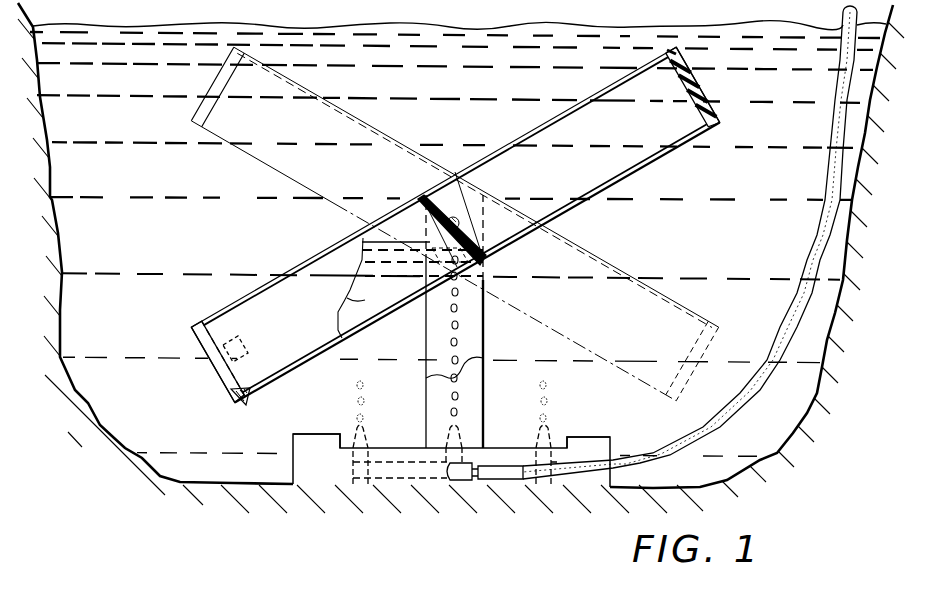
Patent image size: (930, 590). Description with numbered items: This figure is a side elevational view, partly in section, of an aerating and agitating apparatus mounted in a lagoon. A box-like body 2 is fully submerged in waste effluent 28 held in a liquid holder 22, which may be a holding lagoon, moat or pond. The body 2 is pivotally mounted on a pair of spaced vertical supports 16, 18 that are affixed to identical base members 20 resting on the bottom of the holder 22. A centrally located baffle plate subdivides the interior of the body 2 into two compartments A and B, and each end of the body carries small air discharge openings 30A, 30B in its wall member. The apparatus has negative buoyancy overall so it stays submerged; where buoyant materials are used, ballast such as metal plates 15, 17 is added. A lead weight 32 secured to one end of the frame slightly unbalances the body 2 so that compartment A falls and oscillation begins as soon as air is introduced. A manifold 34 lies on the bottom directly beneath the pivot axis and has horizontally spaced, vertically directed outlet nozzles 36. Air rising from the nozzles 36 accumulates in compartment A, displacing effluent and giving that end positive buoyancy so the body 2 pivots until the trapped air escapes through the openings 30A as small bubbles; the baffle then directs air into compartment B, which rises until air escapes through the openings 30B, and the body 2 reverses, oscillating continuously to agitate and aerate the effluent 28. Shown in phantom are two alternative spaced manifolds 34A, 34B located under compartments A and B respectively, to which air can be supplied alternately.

The box-like body 2 is at (198, 80).
The metal plate 15 is at (230, 403).
The vertical support 16 is at (432, 393).
The metal plate 17 is at (310, 430).
The vertical support 18 is at (430, 337).
The base member 20 is at (293, 463).
The liquid holder 22 is at (110, 432).
The waste effluent 28 is at (114, 129).
The air discharge openings 30A is at (205, 327).
The air discharge openings 30B is at (670, 51).
The lead weight 32 is at (240, 346).
The manifold 34 is at (445, 452).
The gas manifold 34A is at (353, 458).
The gas manifold 34B is at (537, 457).
The outlet nozzle 36 is at (460, 433).
The compartment A is at (338, 312).
The compartment B is at (622, 165).